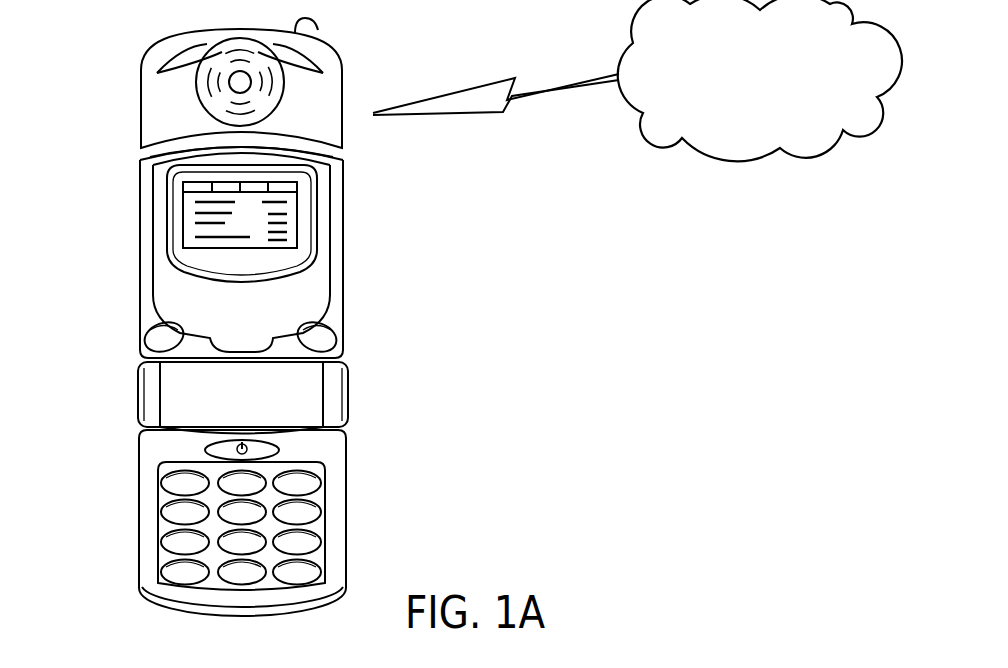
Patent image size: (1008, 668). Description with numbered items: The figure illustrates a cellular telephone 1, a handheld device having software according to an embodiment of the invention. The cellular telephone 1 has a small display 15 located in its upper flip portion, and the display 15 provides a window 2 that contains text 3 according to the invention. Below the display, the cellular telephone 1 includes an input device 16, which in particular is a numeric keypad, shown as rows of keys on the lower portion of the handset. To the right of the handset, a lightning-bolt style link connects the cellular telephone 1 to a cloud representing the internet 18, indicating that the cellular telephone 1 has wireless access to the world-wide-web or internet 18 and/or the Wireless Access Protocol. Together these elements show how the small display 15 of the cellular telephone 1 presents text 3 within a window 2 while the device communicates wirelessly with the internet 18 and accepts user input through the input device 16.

The cellular telephone 1 is at (112, 71).
The window 2 is at (183, 186).
The text 3 is at (205, 228).
The display 15 is at (313, 208).
The input device 16 is at (316, 498).
The internet 18 is at (782, 150).